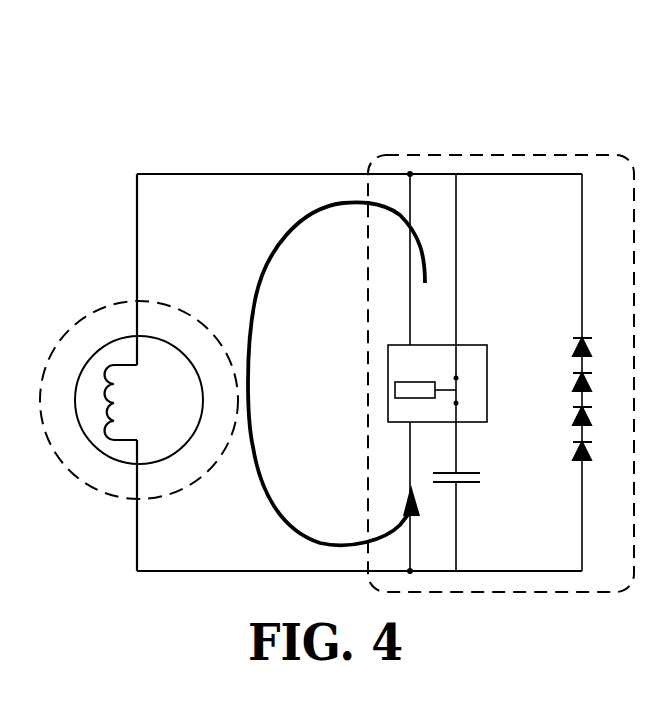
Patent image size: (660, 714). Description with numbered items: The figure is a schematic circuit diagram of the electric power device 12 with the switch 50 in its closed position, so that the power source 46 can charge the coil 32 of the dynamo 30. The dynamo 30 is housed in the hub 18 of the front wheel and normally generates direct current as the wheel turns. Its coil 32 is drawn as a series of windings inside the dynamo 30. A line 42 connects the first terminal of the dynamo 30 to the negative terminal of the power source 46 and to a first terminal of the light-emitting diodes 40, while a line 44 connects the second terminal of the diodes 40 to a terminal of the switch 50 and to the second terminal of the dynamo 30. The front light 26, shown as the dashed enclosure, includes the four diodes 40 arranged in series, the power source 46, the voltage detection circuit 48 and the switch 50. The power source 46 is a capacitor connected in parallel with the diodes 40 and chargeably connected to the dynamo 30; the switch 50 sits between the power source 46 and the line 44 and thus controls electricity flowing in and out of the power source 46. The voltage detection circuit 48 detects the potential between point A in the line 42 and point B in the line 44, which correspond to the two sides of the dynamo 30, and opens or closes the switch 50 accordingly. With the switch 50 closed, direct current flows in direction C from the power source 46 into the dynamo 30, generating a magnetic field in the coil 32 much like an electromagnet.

The electric power device 12 is at (361, 66).
The hub 18 is at (88, 313).
The front light 26 is at (562, 153).
The dynamo 30 is at (189, 447).
The coil 32 is at (122, 403).
The light-emitting diodes 40 is at (588, 382).
The line 42 is at (258, 571).
The line 44 is at (197, 174).
The power source 46 is at (472, 483).
The voltage detection circuit 48 is at (395, 358).
The switch 50 is at (460, 391).
The point A is at (410, 571).
The point B is at (410, 174).
The direction C is at (278, 238).